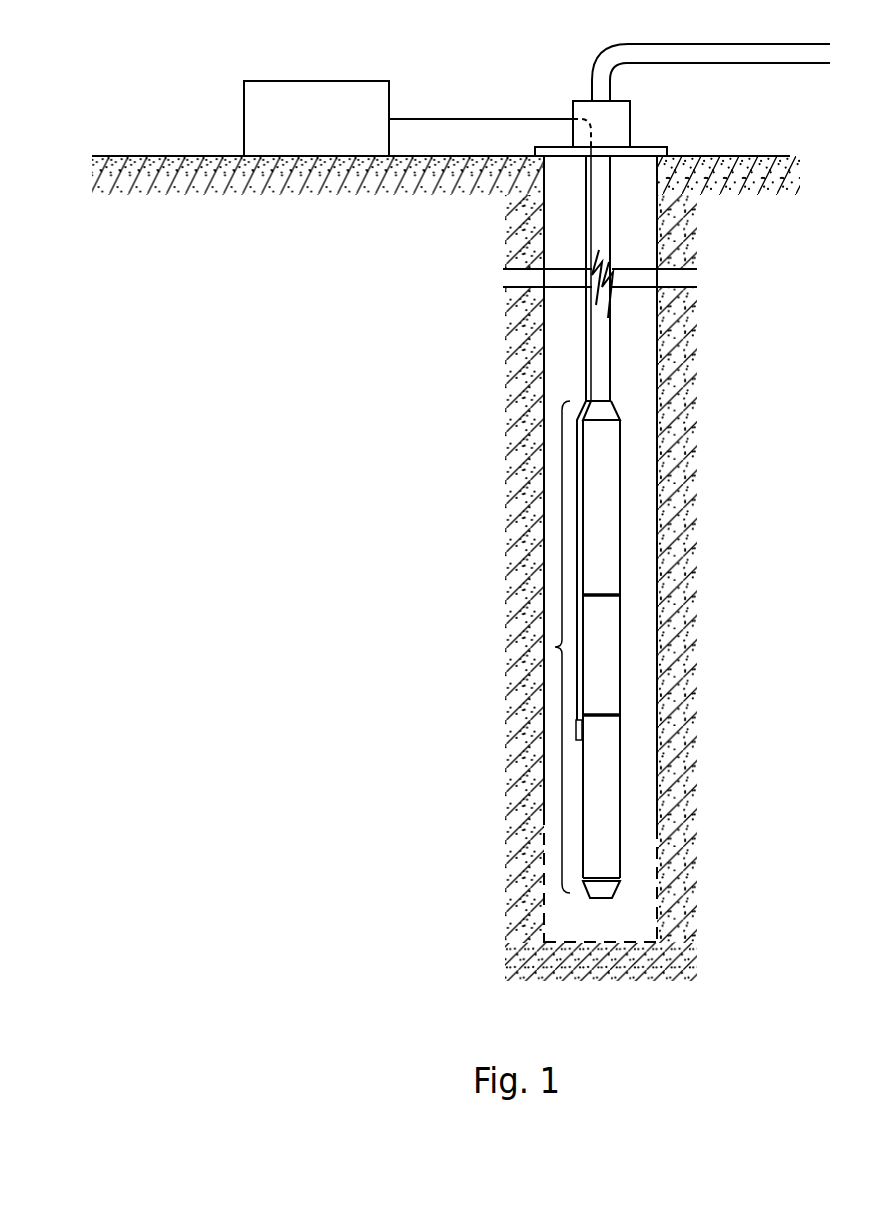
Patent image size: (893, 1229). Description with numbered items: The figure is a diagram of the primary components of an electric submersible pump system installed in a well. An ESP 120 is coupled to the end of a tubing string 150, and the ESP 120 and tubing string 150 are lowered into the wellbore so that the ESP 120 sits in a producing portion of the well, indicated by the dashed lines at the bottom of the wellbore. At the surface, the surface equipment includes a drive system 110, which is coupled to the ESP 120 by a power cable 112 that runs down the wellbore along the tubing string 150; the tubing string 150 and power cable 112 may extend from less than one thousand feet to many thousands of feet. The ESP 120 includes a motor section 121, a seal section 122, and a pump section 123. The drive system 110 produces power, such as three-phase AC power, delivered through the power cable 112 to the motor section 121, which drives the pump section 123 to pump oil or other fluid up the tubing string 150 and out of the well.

The drive system 110 is at (318, 81).
The power cable 112 is at (478, 119).
The tubing string 150 is at (612, 354).
The ESP 120 is at (555, 647).
The motor section 121 is at (620, 820).
The seal section 122 is at (620, 645).
The pump section 123 is at (620, 496).